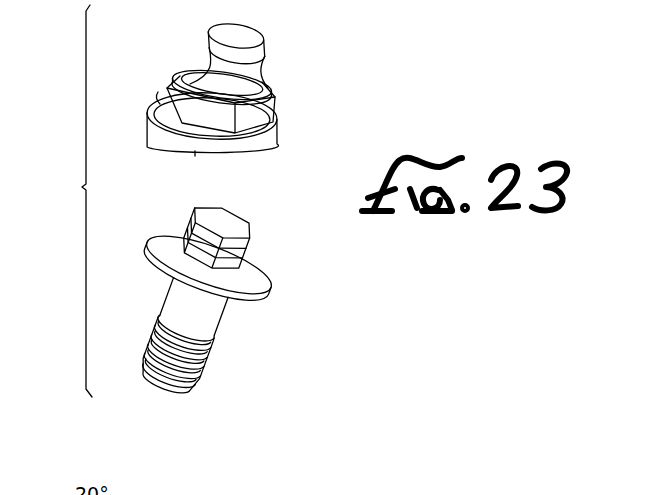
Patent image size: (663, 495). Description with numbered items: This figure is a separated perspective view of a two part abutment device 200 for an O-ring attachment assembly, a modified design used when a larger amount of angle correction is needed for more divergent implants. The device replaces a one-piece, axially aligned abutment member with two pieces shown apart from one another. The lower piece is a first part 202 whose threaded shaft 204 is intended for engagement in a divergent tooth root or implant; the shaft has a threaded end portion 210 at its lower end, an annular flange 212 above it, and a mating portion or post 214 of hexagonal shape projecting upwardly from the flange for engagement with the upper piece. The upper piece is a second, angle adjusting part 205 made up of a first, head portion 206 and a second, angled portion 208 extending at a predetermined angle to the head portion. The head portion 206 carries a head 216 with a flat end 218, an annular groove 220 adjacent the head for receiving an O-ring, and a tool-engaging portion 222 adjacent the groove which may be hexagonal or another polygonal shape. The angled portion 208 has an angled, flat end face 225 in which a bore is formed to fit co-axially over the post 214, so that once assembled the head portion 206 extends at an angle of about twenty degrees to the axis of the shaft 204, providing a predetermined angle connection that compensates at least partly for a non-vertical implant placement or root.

The two part abutment device 200 is at (69, 201).
The first part 202 is at (249, 328).
The threaded shaft 204 is at (218, 338).
The angle adjusting part 205 is at (286, 90).
The head portion 206 is at (269, 61).
The angled portion 208 is at (283, 134).
The threaded end portion 210 is at (200, 368).
The annular flange 212 is at (260, 278).
The post 214 is at (252, 250).
The head 216 is at (211, 38).
The flat end 218 is at (245, 32).
The annular groove 220 is at (210, 63).
The tool-engaging portion 222 is at (153, 86).
The angled flat end face 225 is at (195, 151).